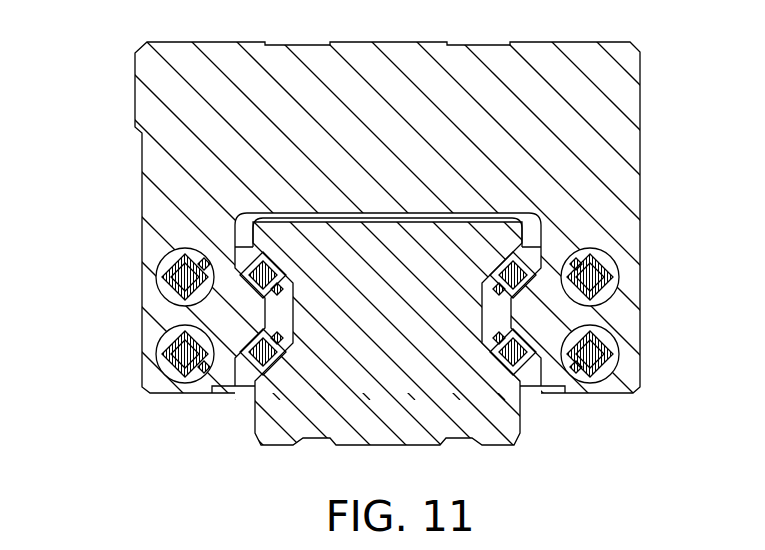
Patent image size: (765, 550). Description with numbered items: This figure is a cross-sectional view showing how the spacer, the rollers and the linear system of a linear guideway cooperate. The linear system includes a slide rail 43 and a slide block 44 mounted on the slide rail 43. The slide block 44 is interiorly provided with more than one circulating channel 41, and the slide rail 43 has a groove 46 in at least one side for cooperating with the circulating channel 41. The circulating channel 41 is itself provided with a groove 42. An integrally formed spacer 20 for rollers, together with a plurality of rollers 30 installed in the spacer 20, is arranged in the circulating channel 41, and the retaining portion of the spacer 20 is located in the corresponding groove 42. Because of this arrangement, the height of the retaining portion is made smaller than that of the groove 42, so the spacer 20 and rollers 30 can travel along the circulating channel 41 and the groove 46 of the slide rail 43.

The spacer 20 is at (200, 256).
The rollers 30 is at (185, 347).
The circulating channel 41 is at (620, 266).
The groove 42 is at (597, 260).
The slide rail 43 is at (521, 418).
The slide block 44 is at (135, 67).
The groove 46 is at (493, 247).